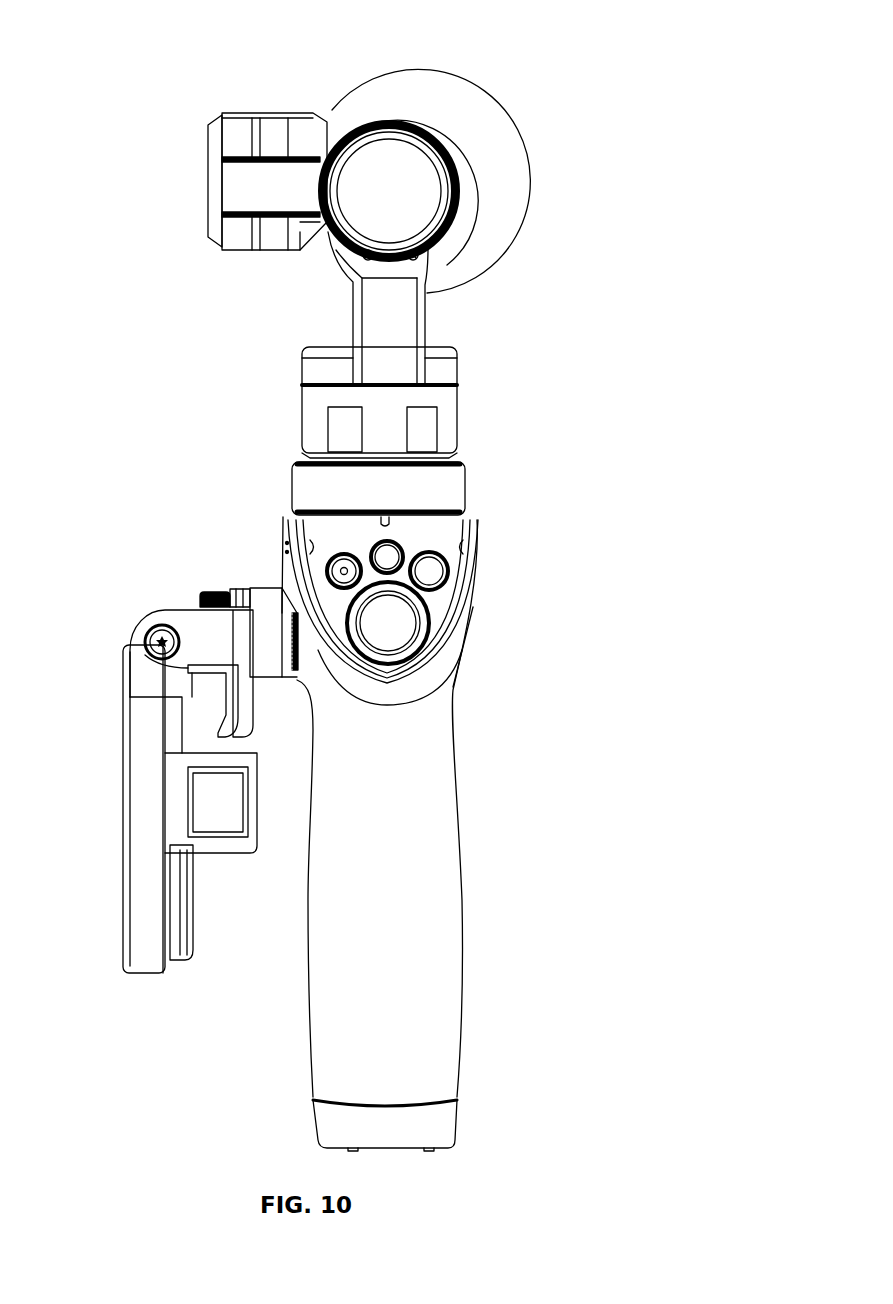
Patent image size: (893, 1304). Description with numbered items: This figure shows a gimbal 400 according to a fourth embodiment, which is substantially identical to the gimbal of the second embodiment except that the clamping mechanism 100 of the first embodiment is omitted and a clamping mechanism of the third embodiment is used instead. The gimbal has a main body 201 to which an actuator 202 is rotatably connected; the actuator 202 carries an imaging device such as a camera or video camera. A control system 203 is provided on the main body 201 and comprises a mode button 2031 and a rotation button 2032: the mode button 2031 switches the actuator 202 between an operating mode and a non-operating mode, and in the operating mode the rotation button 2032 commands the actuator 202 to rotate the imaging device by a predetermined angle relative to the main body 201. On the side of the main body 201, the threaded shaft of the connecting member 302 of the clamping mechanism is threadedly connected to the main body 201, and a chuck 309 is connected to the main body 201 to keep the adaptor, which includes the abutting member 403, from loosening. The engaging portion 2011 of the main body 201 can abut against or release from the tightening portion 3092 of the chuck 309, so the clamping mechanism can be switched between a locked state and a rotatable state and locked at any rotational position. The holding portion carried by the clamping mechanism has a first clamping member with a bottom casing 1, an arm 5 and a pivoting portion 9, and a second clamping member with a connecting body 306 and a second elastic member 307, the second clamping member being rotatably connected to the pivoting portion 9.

The gimbal 400 is at (228, 31).
The actuator 202 is at (375, 413).
The main body 201 is at (427, 962).
The engaging portion 2011 is at (290, 677).
The control system 203 is at (435, 610).
The rotation button 2032 is at (433, 573).
The mode button 2031 is at (385, 628).
The chuck 309 is at (282, 597).
The tightening portion 3092 is at (297, 655).
The abutting member 403 is at (267, 595).
The connecting member 302 is at (208, 603).
The clamping mechanism 100 is at (108, 617).
The pivoting portion 9 is at (138, 680).
The second elastic member 307 is at (200, 722).
The bottom casing 1 is at (138, 853).
The connecting body 306 is at (188, 768).
The arm 5 is at (225, 845).